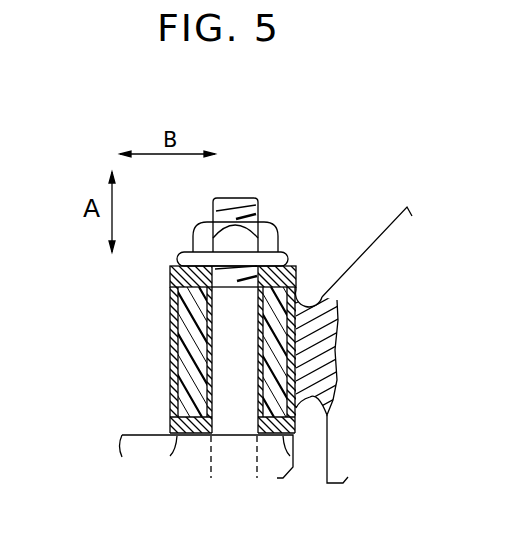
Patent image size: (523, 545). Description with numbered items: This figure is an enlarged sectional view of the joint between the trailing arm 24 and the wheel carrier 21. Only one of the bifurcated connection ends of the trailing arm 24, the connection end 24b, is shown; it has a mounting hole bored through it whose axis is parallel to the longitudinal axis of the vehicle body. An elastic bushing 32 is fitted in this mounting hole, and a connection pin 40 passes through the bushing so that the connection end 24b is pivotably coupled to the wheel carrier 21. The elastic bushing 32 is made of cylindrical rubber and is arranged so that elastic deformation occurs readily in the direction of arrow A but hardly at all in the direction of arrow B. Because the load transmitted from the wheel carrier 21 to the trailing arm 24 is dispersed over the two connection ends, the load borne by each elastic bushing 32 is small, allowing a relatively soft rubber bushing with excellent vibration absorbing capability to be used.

The wheel carrier 21 is at (122, 435).
The trailing arm 24 is at (397, 384).
The connection end 24b is at (312, 293).
The elastic bushing 32 is at (180, 362).
The connection pin 40 is at (211, 401).